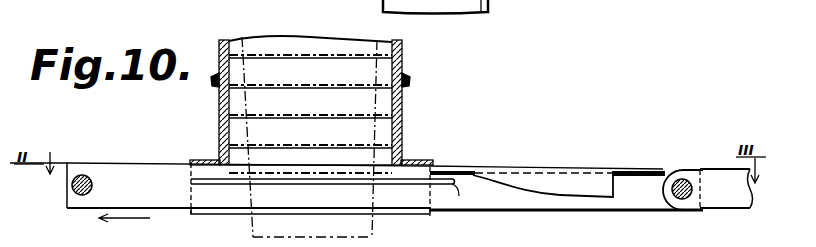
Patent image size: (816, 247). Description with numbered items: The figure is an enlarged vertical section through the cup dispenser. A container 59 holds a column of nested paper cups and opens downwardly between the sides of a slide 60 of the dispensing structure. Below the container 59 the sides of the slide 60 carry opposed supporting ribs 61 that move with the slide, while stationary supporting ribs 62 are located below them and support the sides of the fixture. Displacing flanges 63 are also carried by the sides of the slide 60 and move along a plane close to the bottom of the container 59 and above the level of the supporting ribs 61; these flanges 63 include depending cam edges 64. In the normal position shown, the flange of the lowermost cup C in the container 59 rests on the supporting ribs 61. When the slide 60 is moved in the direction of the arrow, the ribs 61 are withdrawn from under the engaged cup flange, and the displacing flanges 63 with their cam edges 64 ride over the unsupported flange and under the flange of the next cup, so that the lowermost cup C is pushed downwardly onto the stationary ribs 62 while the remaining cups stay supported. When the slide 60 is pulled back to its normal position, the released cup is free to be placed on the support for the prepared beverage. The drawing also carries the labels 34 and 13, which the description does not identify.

The container 59 is at (402, 64).
The slide 60 is at (146, 168).
The supporting ribs 61 is at (334, 195).
The stationary supporting ribs 62 is at (228, 213).
The displacing flanges 63 is at (474, 170).
The cam edges 64 is at (552, 192).
The arm 34 is at (733, 207).
The container 13 is at (312, 241).
The cup C is at (278, 57).